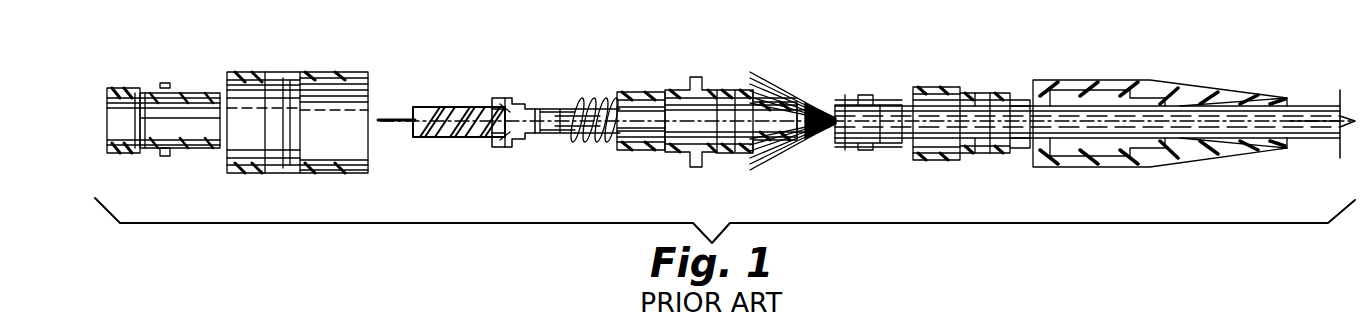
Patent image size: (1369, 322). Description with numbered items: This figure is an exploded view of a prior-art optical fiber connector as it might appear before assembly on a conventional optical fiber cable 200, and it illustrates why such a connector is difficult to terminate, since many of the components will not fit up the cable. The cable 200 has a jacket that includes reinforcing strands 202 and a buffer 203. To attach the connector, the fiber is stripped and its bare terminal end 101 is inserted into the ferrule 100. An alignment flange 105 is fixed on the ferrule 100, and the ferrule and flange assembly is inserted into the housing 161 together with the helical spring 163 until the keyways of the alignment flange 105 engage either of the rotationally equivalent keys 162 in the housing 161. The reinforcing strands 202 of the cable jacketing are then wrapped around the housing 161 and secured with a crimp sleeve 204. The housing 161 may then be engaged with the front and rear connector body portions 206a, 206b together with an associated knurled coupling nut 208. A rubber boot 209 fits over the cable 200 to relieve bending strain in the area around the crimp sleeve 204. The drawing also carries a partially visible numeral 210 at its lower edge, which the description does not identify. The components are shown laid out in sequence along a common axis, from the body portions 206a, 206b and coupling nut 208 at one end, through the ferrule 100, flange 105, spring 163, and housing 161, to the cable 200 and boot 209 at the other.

The ferrule 100 is at (455, 108).
The bare terminal end 101 is at (396, 117).
The alignment flange 105 is at (508, 148).
The housing 161 is at (660, 88).
The keys 162 is at (628, 152).
The helical spring 163 is at (592, 98).
The optical fiber cable 200 is at (1315, 141).
The reinforcing strands 202 is at (776, 92).
The buffer 203 is at (814, 101).
The crimp sleeve 204 is at (865, 94).
The front connector body portion 206a is at (131, 92).
The rear connector body portion 206b is at (970, 88).
The knurled coupling nut 208 is at (247, 82).
The rubber boot 209 is at (1130, 98).
The cable assembly 210 is at (1020, 321).